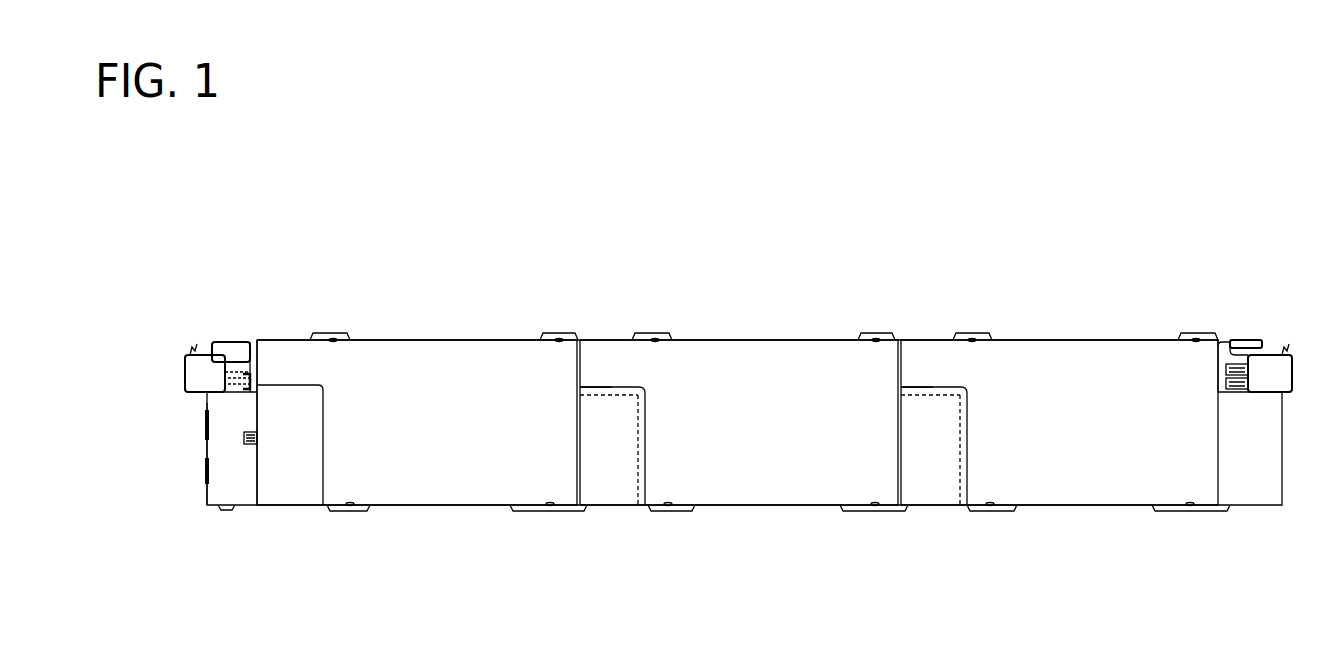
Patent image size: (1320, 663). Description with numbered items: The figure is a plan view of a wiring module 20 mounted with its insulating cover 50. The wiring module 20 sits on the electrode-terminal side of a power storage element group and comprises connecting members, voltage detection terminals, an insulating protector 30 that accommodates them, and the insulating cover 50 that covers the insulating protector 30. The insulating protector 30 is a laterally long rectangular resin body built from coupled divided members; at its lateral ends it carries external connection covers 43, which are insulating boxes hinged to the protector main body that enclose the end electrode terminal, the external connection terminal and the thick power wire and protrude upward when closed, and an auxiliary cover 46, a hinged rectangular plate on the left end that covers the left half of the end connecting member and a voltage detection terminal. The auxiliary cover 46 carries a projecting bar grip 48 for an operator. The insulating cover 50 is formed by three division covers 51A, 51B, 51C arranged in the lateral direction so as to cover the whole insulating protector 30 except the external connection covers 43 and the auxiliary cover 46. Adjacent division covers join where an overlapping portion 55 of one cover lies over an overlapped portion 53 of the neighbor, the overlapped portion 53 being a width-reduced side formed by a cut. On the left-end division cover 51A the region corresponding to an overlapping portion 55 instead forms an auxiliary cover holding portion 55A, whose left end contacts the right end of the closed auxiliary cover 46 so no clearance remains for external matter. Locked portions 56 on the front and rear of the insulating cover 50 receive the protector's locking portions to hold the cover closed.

The wiring module 20 is at (932, 224).
The insulating protector 30 is at (202, 517).
The external connection cover 43 is at (206, 330).
The auxiliary cover 46 is at (243, 490).
The grip 48 is at (250, 446).
The insulating cover 50 is at (737, 496).
The division cover 51A is at (488, 480).
The division cover 51B is at (795, 480).
The division cover 51C is at (1040, 488).
The overlapped portion 53 is at (612, 387).
The overlapping portion 55 is at (620, 448).
The auxiliary cover holding portion 55A is at (300, 490).
The locked portion 56 is at (331, 333).